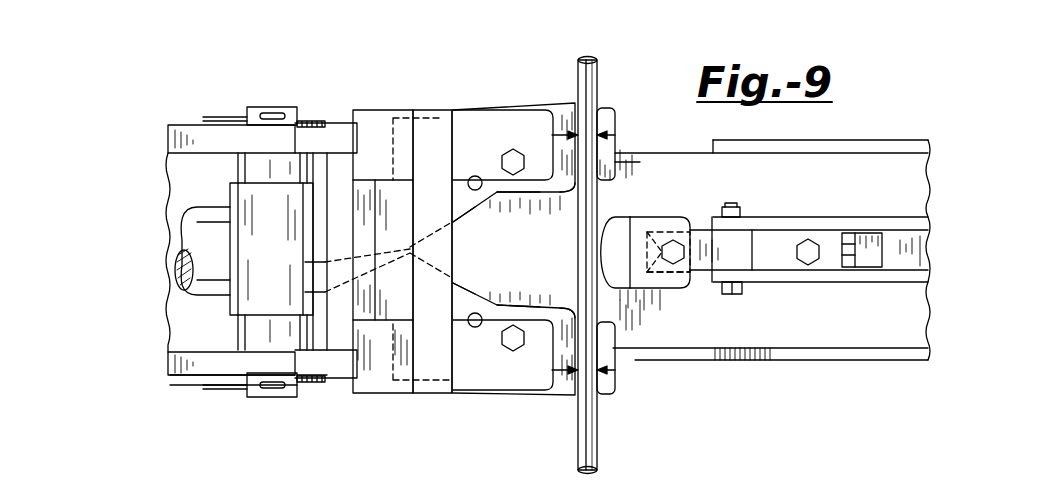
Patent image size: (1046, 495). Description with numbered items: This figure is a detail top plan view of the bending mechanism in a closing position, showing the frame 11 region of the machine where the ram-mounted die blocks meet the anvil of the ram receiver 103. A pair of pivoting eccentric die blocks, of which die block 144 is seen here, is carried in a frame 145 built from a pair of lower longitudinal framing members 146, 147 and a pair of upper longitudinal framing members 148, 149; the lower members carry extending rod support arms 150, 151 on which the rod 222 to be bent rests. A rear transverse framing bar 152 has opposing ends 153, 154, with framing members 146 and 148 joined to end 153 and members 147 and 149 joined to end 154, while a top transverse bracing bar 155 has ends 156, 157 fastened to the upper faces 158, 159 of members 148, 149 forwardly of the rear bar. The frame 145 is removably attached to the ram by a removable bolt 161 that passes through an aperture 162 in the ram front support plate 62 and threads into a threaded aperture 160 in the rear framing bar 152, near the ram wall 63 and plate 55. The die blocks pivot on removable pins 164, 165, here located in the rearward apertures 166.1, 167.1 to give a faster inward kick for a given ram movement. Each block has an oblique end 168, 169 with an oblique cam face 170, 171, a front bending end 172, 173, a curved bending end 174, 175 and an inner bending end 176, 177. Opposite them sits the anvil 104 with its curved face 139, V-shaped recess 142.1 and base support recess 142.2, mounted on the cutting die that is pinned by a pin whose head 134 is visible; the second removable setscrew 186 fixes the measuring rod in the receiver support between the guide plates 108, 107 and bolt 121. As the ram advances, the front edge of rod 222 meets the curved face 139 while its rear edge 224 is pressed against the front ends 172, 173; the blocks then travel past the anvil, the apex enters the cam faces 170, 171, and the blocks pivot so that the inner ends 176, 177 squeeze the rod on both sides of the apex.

The frame 11 is at (815, 369).
The support plate 55 is at (175, 362).
The ram front support plate 62 is at (318, 398).
The frame wall 63 is at (190, 317).
The ram receiver 103 is at (840, 200).
The anvil 104 is at (637, 217).
The lower rail 107 is at (808, 362).
The upper rail 108 is at (785, 140).
The lower bolt 121 is at (742, 290).
The head 134 is at (848, 233).
The curved face 139 is at (603, 280).
The V-shaped recess 142.1 is at (667, 230).
The base support recess 142.2 is at (657, 288).
The die block 144 is at (567, 103).
The frame 145 is at (372, 112).
The lower longitudinal framing member 146 is at (602, 398).
The lower longitudinal framing member 147 is at (604, 110).
The upper longitudinal framing member 148 is at (397, 393).
The upper longitudinal framing member 149 is at (390, 110).
The extending rod support arm 150 is at (612, 384).
The extending rod support arm 151 is at (618, 165).
The rear transverse framing bar 152 is at (363, 200).
The end 153 is at (325, 380).
The end 154 is at (305, 108).
The top transverse bracing bar 155 is at (457, 112).
The end 156 is at (435, 394).
The end 157 is at (418, 110).
The upper face 158 is at (390, 393).
The upper face 159 is at (363, 110).
The threaded aperture 160 is at (314, 300).
The removable bolt 161 is at (312, 247).
The aperture 162 is at (305, 273).
The removable pin 164 is at (508, 378).
The removable pin 165 is at (530, 112).
The aperture 166.1 is at (473, 326).
The aperture 167.1 is at (474, 176).
The oblique end 168 is at (381, 393).
The oblique end 169 is at (400, 110).
The oblique cam face 170 is at (457, 282).
The oblique cam face 171 is at (462, 222).
The front bending end 172 is at (515, 353).
The front bending end 173 is at (520, 140).
The curved bending end 174 is at (571, 312).
The curved bending end 175 is at (572, 185).
The inner bending end 176 is at (513, 304).
The inner bending end 177 is at (515, 197).
The second removable setscrew 186 is at (808, 239).
The rod 222 is at (597, 82).
The rear edge 224 is at (622, 134).